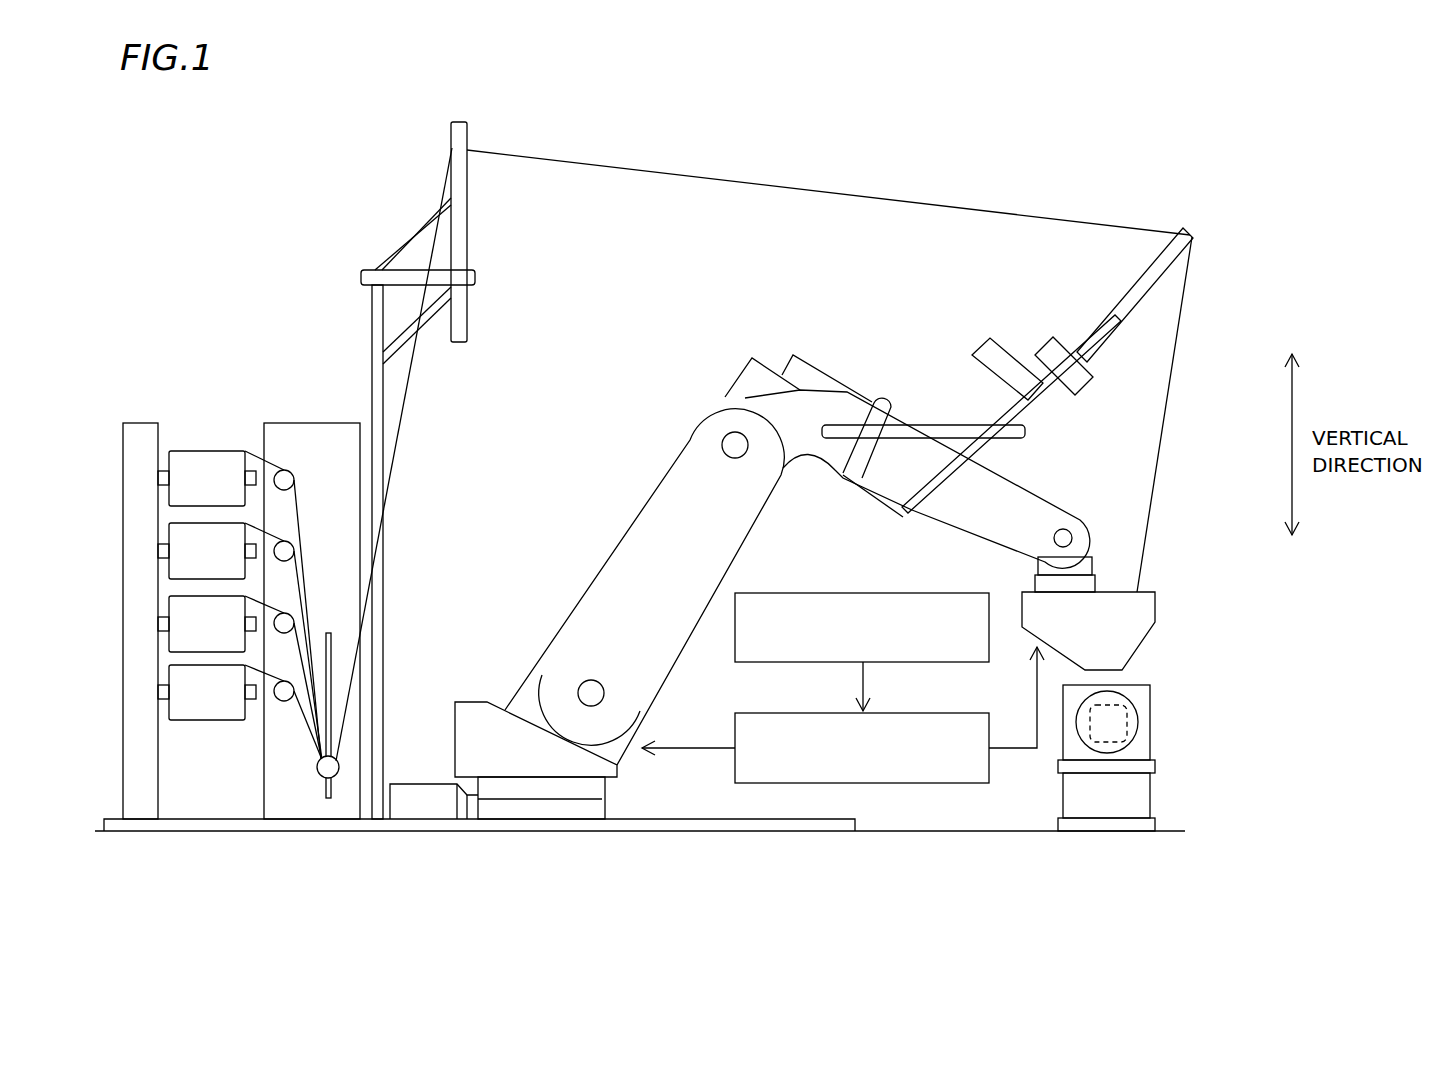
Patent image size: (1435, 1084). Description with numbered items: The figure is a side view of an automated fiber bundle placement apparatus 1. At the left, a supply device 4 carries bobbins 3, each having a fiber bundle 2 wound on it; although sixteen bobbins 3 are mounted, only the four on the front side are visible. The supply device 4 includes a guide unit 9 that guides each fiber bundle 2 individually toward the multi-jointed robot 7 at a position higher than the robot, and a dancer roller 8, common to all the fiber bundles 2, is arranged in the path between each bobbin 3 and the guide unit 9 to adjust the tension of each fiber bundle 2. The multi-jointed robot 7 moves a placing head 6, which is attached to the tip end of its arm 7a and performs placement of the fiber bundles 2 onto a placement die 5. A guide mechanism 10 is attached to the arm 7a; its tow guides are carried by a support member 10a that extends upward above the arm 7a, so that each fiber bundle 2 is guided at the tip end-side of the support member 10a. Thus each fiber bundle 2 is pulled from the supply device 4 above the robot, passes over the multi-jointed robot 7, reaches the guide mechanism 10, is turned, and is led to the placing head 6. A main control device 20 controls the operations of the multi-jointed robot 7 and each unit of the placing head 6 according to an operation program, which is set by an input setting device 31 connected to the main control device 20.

The automated fiber bundle placement apparatus 1 is at (160, 170).
The fiber bundle 2 is at (795, 172).
The bobbin 3 is at (205, 435).
The supply device 4 is at (267, 308).
The placement die 5 is at (1140, 718).
The placing head 6 is at (1157, 623).
The multi-jointed robot 7 is at (684, 382).
The arm 7a is at (1025, 497).
The dancer roller 8 is at (312, 775).
The guide unit 9 is at (386, 182).
The guide mechanism 10 is at (1193, 228).
The support member 10a is at (1130, 282).
The main control device 20 is at (923, 786).
The input setting device 31 is at (825, 593).